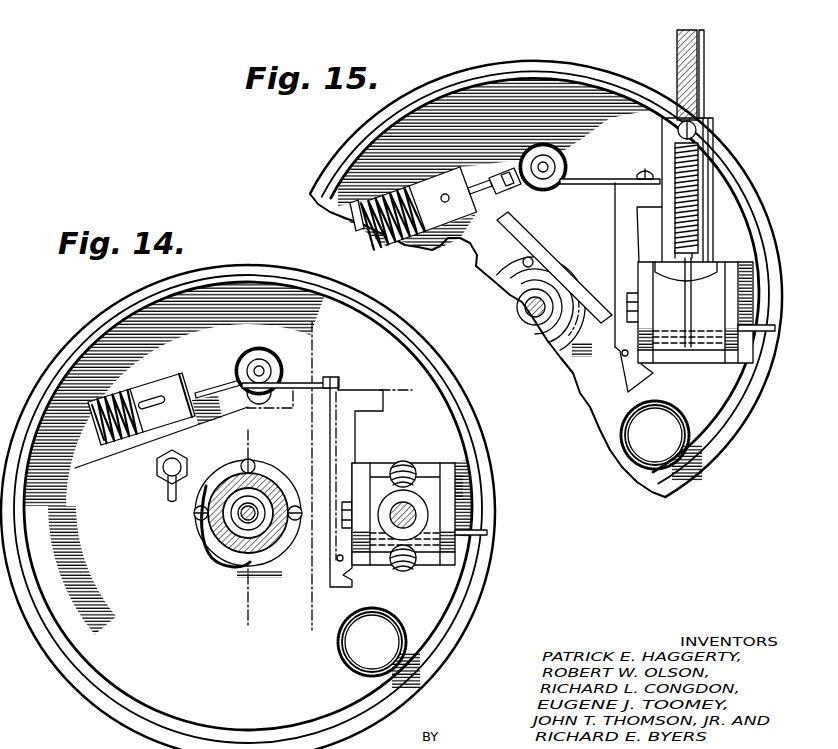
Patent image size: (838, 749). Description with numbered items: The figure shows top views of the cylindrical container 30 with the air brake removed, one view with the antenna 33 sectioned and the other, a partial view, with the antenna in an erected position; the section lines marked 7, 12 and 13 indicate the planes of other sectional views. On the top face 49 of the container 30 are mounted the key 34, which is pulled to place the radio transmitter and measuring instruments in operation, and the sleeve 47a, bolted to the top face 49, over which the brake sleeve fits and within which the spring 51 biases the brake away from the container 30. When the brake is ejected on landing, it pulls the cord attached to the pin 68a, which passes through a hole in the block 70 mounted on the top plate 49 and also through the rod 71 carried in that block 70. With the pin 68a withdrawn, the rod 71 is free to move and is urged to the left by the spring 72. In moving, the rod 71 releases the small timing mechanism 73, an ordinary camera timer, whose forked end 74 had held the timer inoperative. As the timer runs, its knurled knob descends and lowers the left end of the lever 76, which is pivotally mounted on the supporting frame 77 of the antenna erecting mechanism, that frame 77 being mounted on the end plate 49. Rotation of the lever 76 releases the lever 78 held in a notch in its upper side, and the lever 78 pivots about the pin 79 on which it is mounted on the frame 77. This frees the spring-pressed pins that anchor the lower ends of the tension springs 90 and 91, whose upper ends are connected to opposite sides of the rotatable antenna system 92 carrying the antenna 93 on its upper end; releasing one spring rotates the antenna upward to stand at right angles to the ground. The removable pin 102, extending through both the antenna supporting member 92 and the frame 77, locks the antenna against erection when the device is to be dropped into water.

In FIG. 14, the section line 7- 7 is at (232, 527).
In FIG. 14, the section line 12- 12 is at (250, 444).
In FIG. 14, the section line 13- 13 is at (291, 469).
In FIG. 14, the cylindrical container 30 is at (260, 507).
In FIG. 15, the cylindrical container 30 is at (546, 268).
In FIG. 14, the antenna 33 is at (435, 500).
In FIG. 15, the antenna 33 is at (695, 196).
In FIG. 14, the key 34 is at (160, 480).
In FIG. 14, the sleeve 47a is at (248, 510).
In FIG. 14, the top face 49 is at (248, 485).
In FIG. 15, the top face 49 is at (518, 280).
In FIG. 14, the spring 51 is at (217, 527).
In FIG. 14, the pin 68a is at (157, 375).
In FIG. 14, the block 70 is at (141, 400).
In FIG. 15, the block 70 is at (443, 189).
In FIG. 15, the rod 71 is at (505, 189).
In FIG. 14, the spring 72 is at (115, 406).
In FIG. 15, the spring 72 is at (388, 224).
In FIG. 14, the timing mechanism 73 is at (264, 370).
In FIG. 15, the timing mechanism 73 is at (556, 162).
In FIG. 14, the forked end 74 is at (218, 378).
In FIG. 15, the forked end 74 is at (487, 171).
In FIG. 14, the lever 76 is at (286, 371).
In FIG. 15, the lever 76 is at (610, 172).
In FIG. 14, the supporting frame 77 is at (365, 482).
In FIG. 15, the supporting frame 77 is at (654, 255).
In FIG. 14, the lever 78 is at (341, 370).
In FIG. 15, the lever 78 is at (554, 267).
In FIG. 14, the pin 79 is at (315, 566).
In FIG. 15, the pin 79 is at (603, 361).
In FIG. 14, the spring 90 is at (414, 463).
In FIG. 14, the spring 91 is at (405, 576).
In FIG. 15, the spring 91 is at (717, 197).
In FIG. 14, the rotatable antenna system 92 is at (452, 515).
In FIG. 15, the rotatable antenna system 92 is at (711, 129).
In FIG. 14, the antenna 93 is at (458, 509).
In FIG. 15, the antenna 93 is at (716, 74).
In FIG. 14, the removable pin 102 is at (493, 535).
In FIG. 15, the removable pin 102 is at (765, 369).